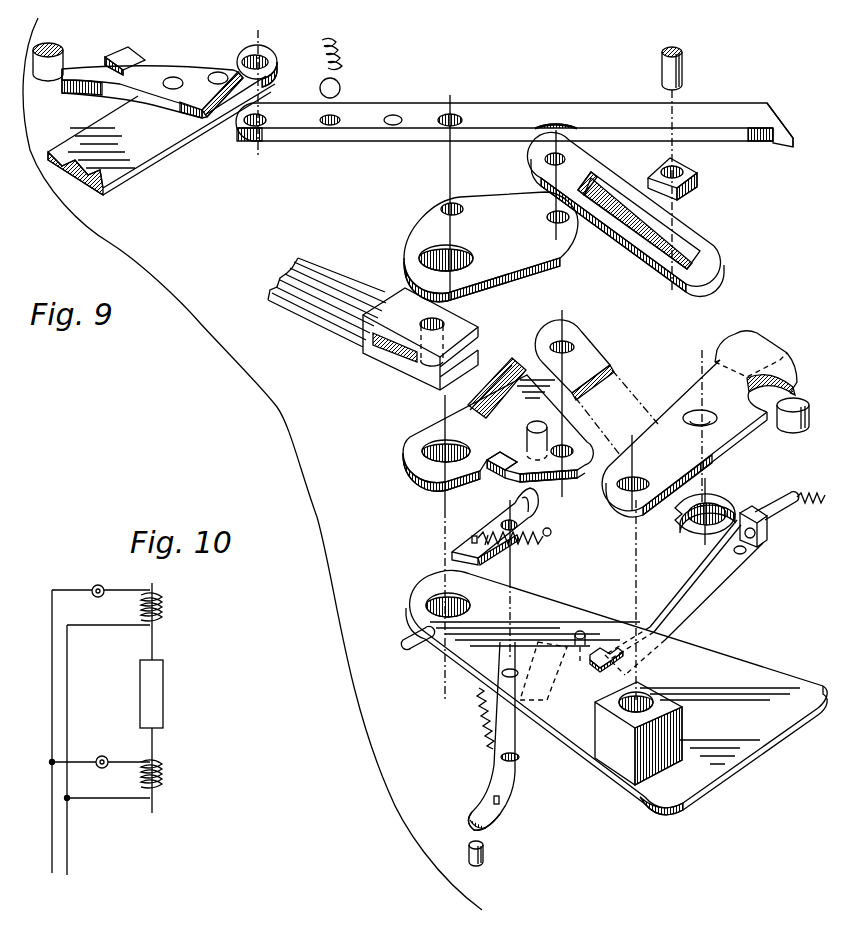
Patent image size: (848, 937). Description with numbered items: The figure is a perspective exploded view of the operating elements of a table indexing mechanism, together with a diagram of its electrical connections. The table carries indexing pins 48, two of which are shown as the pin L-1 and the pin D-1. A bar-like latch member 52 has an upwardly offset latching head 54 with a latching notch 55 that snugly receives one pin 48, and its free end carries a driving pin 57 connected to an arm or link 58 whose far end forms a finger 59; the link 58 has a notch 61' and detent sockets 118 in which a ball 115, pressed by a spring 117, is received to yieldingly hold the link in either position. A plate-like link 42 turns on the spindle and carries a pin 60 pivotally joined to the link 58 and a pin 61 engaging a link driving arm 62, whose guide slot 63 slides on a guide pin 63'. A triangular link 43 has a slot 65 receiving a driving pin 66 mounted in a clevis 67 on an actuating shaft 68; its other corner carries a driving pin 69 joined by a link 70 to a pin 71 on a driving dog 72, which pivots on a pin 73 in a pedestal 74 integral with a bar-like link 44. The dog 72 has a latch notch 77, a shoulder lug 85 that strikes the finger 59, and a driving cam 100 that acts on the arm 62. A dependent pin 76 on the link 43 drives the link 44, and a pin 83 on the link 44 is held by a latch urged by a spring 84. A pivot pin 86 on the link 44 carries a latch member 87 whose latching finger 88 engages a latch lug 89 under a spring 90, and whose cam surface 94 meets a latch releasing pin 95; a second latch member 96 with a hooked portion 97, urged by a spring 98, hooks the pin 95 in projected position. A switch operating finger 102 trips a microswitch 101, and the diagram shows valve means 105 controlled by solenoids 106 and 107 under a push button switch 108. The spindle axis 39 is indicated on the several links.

In FIG. 9, the pivot shaft 39 is at (435, 235).
In FIG. 9, the link 42 is at (491, 247).
In FIG. 9, the link 43 is at (498, 433).
In FIG. 9, the link 44 is at (616, 693).
In FIG. 9, the indexing pin 48 is at (429, 254).
In FIG. 9, the pin L-1 is at (48, 86).
In FIG. 9, the pin D-1 is at (801, 431).
In FIG. 9, the latch member 52 is at (130, 165).
In FIG. 9, the latching head 54 is at (152, 89).
In FIG. 9, the latching notch 55 is at (140, 60).
In FIG. 9, the driving pin 57 is at (259, 40).
In FIG. 9, the arm or link 58 is at (488, 110).
In FIG. 9, the finger 59 is at (784, 134).
In FIG. 9, the pin 60 is at (450, 178).
In FIG. 9, the pin 61 is at (530, 185).
In FIG. 9, the notch 61' is at (556, 104).
In FIG. 9, the link driving arm 62 is at (594, 173).
In FIG. 9, the guide slot 63 is at (639, 220).
In FIG. 9, the guide pin 63' is at (678, 168).
In FIG. 9, the slot 65 is at (525, 366).
In FIG. 9, the driving pin 66 is at (460, 323).
In FIG. 9, the clevis 67 is at (380, 358).
In FIG. 9, the actuating shaft 68 is at (320, 322).
In FIG. 9, the driving pin 69 is at (563, 439).
In FIG. 9, the link 70 is at (594, 364).
In FIG. 9, the pin 71 is at (702, 400).
In FIG. 9, the driving dog 72 is at (730, 430).
In FIG. 9, the pin 73 is at (637, 590).
In FIG. 9, the pedestal 74 is at (675, 722).
In FIG. 9, the pin 76 is at (528, 440).
In FIG. 9, the latch notch 77 is at (748, 394).
In FIG. 9, the pin 83 is at (599, 657).
In FIG. 9, the spring 84 is at (805, 505).
In FIG. 9, the shoulder lug 85 is at (780, 350).
In FIG. 9, the pivot pin 86 is at (511, 562).
In FIG. 9, the latch member 87 is at (537, 513).
In FIG. 9, the latching finger 88 is at (549, 486).
In FIG. 9, the latch lug 89 is at (497, 472).
In FIG. 9, the spring 90 is at (541, 537).
In FIG. 9, the latch releasing cam surface 94 is at (488, 552).
In FIG. 9, the latch releasing pin 95 is at (485, 848).
In FIG. 9, the latch member 96 is at (514, 782).
In FIG. 9, the hooked portion 97 is at (468, 820).
In FIG. 9, the spring 98 is at (478, 713).
In FIG. 9, the driving cam 100 is at (718, 357).
In FIG. 10, the microswitch 101 is at (103, 755).
In FIG. 9, the switch operating finger 102 is at (412, 633).
In FIG. 10, the valve means 105 is at (163, 690).
In FIG. 10, the solenoid 106 is at (165, 605).
In FIG. 10, the solenoid 107 is at (165, 778).
In FIG. 10, the push button switch 108 is at (98, 584).
In FIG. 9, the ball 115 is at (338, 90).
In FIG. 9, the spring 117 is at (342, 50).
In FIG. 9, the detent sockets 118 is at (393, 114).